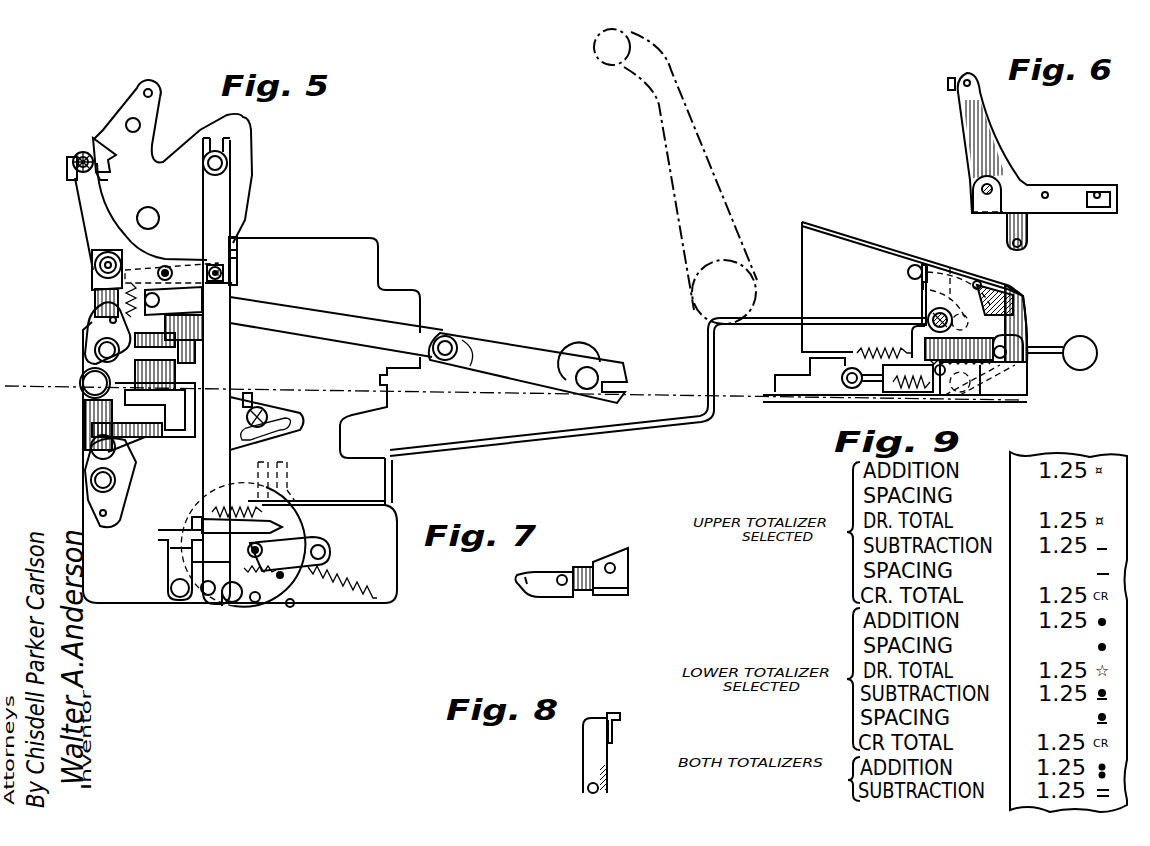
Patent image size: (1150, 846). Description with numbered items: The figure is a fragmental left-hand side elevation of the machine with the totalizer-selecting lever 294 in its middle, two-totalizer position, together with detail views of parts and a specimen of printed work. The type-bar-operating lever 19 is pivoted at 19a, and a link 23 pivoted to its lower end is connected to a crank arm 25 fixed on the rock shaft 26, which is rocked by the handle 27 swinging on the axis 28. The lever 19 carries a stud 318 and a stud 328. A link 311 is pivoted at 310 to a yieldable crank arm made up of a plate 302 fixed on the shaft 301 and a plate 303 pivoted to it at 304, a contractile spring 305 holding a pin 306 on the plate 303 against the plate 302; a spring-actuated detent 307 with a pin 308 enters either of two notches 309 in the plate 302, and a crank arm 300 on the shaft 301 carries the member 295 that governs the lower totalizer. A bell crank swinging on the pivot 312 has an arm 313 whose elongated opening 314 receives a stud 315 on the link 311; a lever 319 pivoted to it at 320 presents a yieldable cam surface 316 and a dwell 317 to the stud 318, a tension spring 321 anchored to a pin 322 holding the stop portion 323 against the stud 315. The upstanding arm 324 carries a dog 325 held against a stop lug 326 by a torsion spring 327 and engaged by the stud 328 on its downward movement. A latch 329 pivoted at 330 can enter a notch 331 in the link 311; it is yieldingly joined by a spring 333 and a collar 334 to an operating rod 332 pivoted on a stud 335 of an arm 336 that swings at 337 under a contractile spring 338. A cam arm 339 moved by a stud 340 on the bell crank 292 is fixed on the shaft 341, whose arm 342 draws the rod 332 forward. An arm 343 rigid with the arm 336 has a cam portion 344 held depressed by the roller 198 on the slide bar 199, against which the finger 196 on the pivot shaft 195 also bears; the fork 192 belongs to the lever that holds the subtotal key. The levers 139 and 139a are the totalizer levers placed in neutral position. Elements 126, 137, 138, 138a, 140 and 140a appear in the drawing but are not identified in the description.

In FIG. 5, the lever 19 is at (243, 167).
In FIG. 5, the pivot axis 19a is at (227, 160).
In FIG. 5, the link 23 is at (337, 325).
In FIG. 5, the crank arm 25 is at (530, 355).
In FIG. 5, the rock shaft 26 is at (588, 368).
In FIG. 5, the handle 27 is at (678, 228).
In FIG. 5, the axis 28 is at (725, 293).
In FIG. 5, the screw 126 is at (248, 393).
In FIG. 5, the plate 137 is at (165, 455).
In FIG. 5, the hole 138 is at (80, 380).
In FIG. 5, the hole 138a is at (92, 452).
In FIG. 5, the lever 139 is at (95, 350).
In FIG. 5, the lever 139a is at (91, 478).
In FIG. 5, the hole 140 is at (98, 355).
In FIG. 5, the hole 140a is at (96, 484).
In FIG. 5, the fork 192 is at (983, 283).
In FIG. 5, the pivot shaft 195 is at (982, 286).
In FIG. 5, the finger 196 is at (1012, 293).
In FIG. 5, the roller 198 is at (1005, 350).
In FIG. 5, the slide bar 199 is at (810, 380).
In FIG. 5, the bell crank 292 is at (1040, 347).
In FIG. 5, the totalizer-selecting lever 294 is at (1080, 340).
In FIG. 5, the member 295 is at (298, 493).
In FIG. 5, the crank arm 300 is at (303, 613).
In FIG. 5, the shaft 301 is at (240, 600).
In FIG. 5, the plate 302 is at (267, 603).
In FIG. 5, the plate 303 is at (220, 603).
In FIG. 5, the pivot 304 is at (230, 607).
In FIG. 5, the contractile spring 305 is at (312, 580).
In FIG. 5, the pin 306 is at (197, 563).
In FIG. 5, the detent 307 is at (325, 551).
In FIG. 5, the pin 308 is at (283, 539).
In FIG. 5, the notches 309 is at (287, 544).
In FIG. 5, the pivot 310 is at (206, 596).
In FIG. 5, the link 311 is at (225, 362).
In FIG. 5, the pivot 312 is at (95, 266).
In FIG. 6, the pivot 312 is at (982, 191).
In FIG. 5, the arm 313 is at (173, 301).
In FIG. 6, the arm 313 is at (1075, 185).
In FIG. 6, the elongated opening 314 is at (1097, 193).
In FIG. 5, the stud 315 is at (222, 273).
In FIG. 5, the yieldable cam surface 316 is at (230, 238).
In FIG. 7, the yieldable cam surface 316 is at (593, 562).
In FIG. 5, the dwell 317 is at (232, 236).
In FIG. 7, the dwell 317 is at (615, 550).
In FIG. 5, the stud 318 is at (157, 204).
In FIG. 5, the lever 319 is at (237, 253).
In FIG. 7, the lever 319 is at (583, 590).
In FIG. 5, the pivot 320 is at (188, 252).
In FIG. 6, the pivot 320 is at (1046, 192).
In FIG. 7, the pivot 320 is at (558, 578).
In FIG. 5, the tension spring 321 is at (122, 296).
In FIG. 5, the pin 322 is at (155, 361).
In FIG. 6, the pin 322 is at (1022, 240).
In FIG. 5, the stop portion 323 is at (232, 286).
In FIG. 7, the stop portion 323 is at (612, 596).
In FIG. 5, the arm 324 is at (88, 223).
In FIG. 6, the arm 324 is at (990, 140).
In FIG. 5, the dog 325 is at (108, 172).
In FIG. 5, the stop lug 326 is at (68, 160).
In FIG. 6, the stop lug 326 is at (948, 82).
In FIG. 5, the torsion spring 327 is at (102, 180).
In FIG. 5, the stud 328 is at (128, 120).
In FIG. 5, the latch 329 is at (185, 523).
In FIG. 8, the latch 329 is at (590, 748).
In FIG. 5, the pivot 330 is at (171, 587).
In FIG. 8, the pivot 330 is at (588, 788).
In FIG. 5, the notch 331 is at (210, 519).
In FIG. 5, the operating rod 332 is at (468, 447).
In FIG. 5, the spring 333 is at (217, 512).
In FIG. 5, the collar 334 is at (187, 553).
In FIG. 5, the stud 335 is at (933, 310).
In FIG. 5, the arm 336 is at (913, 357).
In FIG. 5, the pivot 337 is at (958, 393).
In FIG. 5, the contractile spring 338 is at (910, 393).
In FIG. 5, the cam arm 339 is at (950, 268).
In FIG. 5, the stud 340 is at (957, 306).
In FIG. 5, the pivot shaft 341 is at (908, 270).
In FIG. 5, the arm 342 is at (921, 283).
In FIG. 5, the arm 343 is at (980, 380).
In FIG. 5, the cam portion 344 is at (1027, 370).